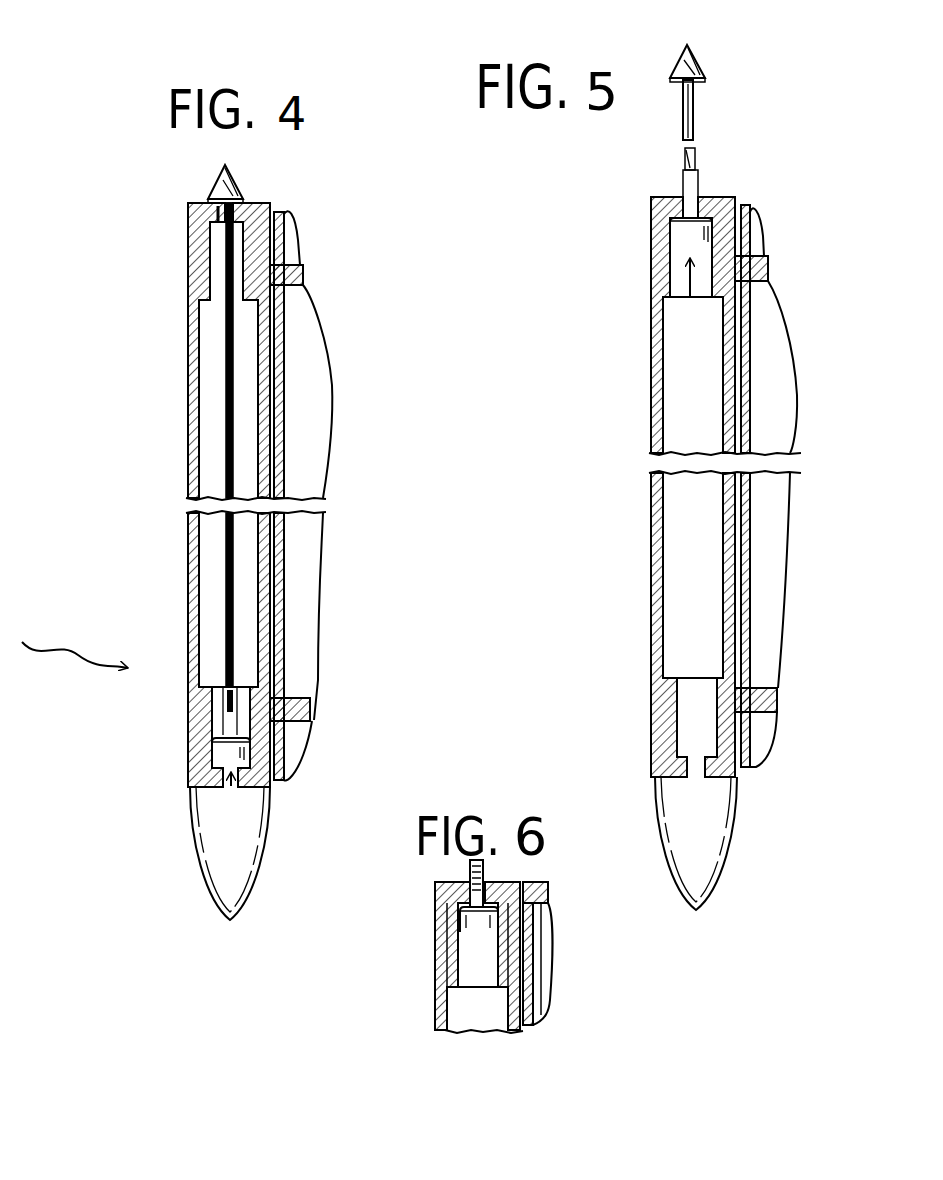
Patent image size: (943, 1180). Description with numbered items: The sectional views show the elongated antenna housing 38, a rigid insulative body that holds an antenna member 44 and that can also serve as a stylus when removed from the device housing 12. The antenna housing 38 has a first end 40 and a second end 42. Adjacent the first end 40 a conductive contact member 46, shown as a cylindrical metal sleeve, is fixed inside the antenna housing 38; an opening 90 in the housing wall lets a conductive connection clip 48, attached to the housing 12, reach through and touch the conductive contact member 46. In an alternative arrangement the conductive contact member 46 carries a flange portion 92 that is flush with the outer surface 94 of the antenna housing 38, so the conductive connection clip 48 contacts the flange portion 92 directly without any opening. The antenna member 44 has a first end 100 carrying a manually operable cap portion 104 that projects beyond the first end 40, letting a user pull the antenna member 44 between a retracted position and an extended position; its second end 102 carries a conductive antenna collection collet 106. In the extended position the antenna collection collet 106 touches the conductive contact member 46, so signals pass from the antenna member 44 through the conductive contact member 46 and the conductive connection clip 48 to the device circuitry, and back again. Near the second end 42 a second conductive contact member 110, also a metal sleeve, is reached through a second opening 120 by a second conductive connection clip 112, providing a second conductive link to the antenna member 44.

In FIG. 4, the housing 12 is at (285, 568).
In FIG. 5, the housing 12 is at (762, 606).
In FIG. 5, the elongated antenna housing 38 is at (642, 576).
In FIG. 4, the first end 40 is at (182, 214).
In FIG. 5, the first end 40 is at (647, 206).
In FIG. 4, the second end 42 is at (200, 866).
In FIG. 5, the second end 42 is at (736, 870).
In FIG. 4, the antenna member 44 is at (226, 430).
In FIG. 5, the antenna member 44 is at (697, 125).
In FIG. 4, the conductive contact member 46 is at (188, 240).
In FIG. 5, the conductive contact member 46 is at (738, 200).
In FIG. 6, the conductive contact member 46 is at (440, 950).
In FIG. 4, the conductive connection clip 48 is at (296, 262).
In FIG. 5, the conductive connection clip 48 is at (766, 258).
In FIG. 6, the conductive connection clip 48 is at (549, 896).
In FIG. 4, the opening 90 is at (282, 302).
In FIG. 6, the flange portion 92 is at (510, 884).
In FIG. 6, the outer surface 94 is at (527, 1026).
In FIG. 4, the first end 100 is at (200, 190).
In FIG. 5, the first end 100 is at (722, 60).
In FIG. 4, the second end 102 is at (226, 785).
In FIG. 5, the second end 102 is at (695, 298).
In FIG. 4, the manually operable cap portion 104 is at (241, 186).
In FIG. 4, the antenna collection collet 106 is at (232, 752).
In FIG. 5, the antenna collection collet 106 is at (690, 234).
In FIG. 4, the second conductive contact member 110 is at (283, 782).
In FIG. 5, the second conductive contact member 110 is at (776, 708).
In FIG. 4, the second conductive connection clip 112 is at (306, 722).
In FIG. 4, the second opening 120 is at (290, 684).